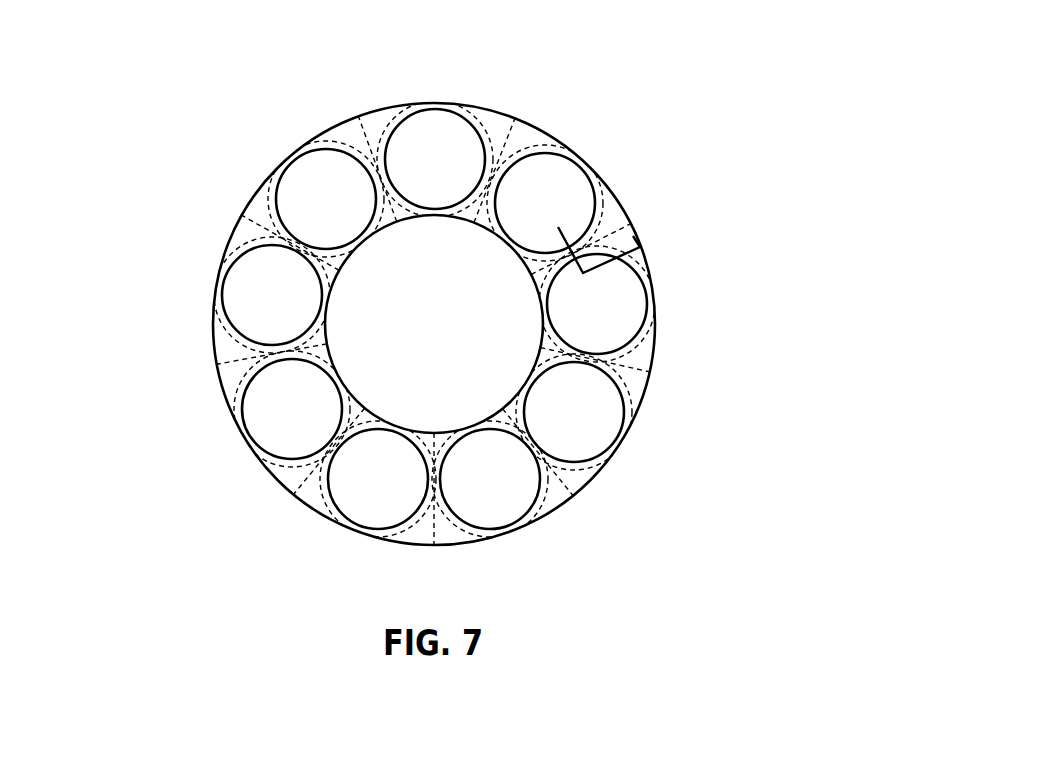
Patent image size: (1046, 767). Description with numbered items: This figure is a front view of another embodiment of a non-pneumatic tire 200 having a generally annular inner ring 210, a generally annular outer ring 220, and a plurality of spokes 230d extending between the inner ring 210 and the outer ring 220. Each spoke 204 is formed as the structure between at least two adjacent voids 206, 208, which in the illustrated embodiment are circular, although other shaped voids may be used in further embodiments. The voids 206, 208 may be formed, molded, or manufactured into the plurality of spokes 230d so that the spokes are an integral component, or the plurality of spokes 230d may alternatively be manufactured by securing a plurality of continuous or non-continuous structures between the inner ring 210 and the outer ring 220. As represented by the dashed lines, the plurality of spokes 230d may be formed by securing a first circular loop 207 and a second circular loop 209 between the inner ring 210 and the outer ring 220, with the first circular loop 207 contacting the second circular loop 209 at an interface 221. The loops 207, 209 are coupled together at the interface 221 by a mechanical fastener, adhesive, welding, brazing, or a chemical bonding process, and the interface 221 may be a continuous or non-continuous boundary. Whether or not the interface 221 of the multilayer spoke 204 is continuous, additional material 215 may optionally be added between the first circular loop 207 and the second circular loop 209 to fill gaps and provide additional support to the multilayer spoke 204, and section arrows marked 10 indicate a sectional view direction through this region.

The non-pneumatic tire 200 is at (192, 115).
The plurality of spokes 230d is at (185, 162).
The generally annular outer ring 220 is at (210, 322).
The generally annular inner ring 210 is at (330, 303).
The void 206 is at (530, 155).
The first circular loop 207 is at (513, 152).
The spoke 204 is at (580, 237).
The additional material 215 is at (615, 227).
The interface 221 is at (587, 250).
The void 208 is at (625, 347).
The second circular loop 209 is at (623, 362).
The section line 10- 10 is at (560, 228).